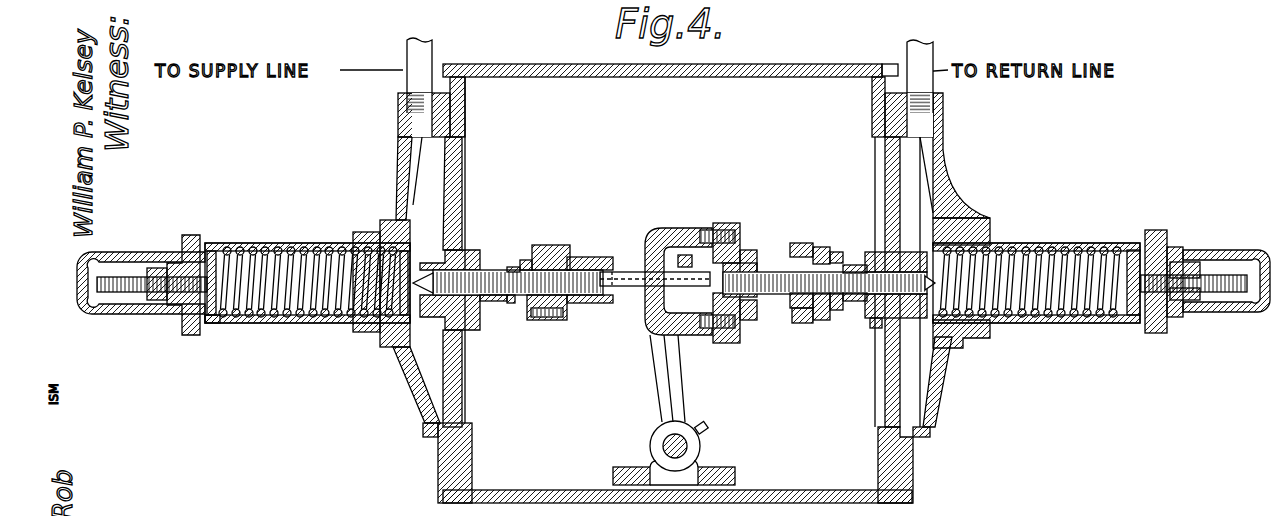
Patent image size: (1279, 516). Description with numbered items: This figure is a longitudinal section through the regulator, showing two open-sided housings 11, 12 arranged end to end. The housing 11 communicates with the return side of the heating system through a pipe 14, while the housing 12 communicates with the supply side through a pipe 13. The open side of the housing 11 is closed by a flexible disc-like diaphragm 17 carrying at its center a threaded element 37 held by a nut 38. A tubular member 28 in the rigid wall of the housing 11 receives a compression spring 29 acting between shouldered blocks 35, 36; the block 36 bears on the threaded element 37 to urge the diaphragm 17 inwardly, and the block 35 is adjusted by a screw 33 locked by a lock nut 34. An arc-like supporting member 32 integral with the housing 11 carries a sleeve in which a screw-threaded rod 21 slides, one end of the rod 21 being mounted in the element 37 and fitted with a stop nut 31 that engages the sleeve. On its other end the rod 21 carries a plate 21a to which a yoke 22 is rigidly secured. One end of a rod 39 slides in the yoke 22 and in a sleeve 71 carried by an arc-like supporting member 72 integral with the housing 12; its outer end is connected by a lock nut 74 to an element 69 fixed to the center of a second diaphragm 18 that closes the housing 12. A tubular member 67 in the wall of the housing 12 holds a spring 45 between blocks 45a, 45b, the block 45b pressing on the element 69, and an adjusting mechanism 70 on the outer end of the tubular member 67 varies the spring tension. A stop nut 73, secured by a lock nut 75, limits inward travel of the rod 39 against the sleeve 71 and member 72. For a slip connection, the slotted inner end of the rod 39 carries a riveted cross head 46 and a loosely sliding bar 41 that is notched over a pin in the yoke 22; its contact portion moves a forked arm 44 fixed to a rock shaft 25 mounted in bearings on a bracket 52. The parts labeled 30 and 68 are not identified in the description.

The housing 11 is at (940, 403).
The housing 12 is at (405, 383).
The pipe 13 is at (422, 53).
The pipe or conduit 14 is at (913, 50).
The diaphragm 17 is at (888, 155).
The diaphragm 18 is at (452, 185).
The screw-threaded rod 21 is at (782, 298).
The plate 21a is at (727, 224).
The yoke 22 is at (653, 248).
The rock shaft 25 is at (668, 440).
The tubular member 28 is at (1007, 247).
The compression spring 29 is at (1050, 256).
The adjusting nut 30 is at (1187, 277).
The stop nut 31 is at (827, 252).
The arc-like supporting member 32 is at (793, 243).
The screw 33 is at (1227, 277).
The lock nut 34 is at (1197, 296).
The shouldered block 35 is at (1133, 252).
The shouldered block 36 is at (942, 253).
The threaded element 37 is at (877, 327).
The nut 38 is at (908, 250).
The rod 39 is at (562, 321).
The bar 41 is at (650, 292).
The forked arm 44 is at (660, 372).
The spring 45 is at (267, 257).
The block 45a is at (212, 323).
The block 45b is at (407, 318).
The cross head 46 is at (710, 328).
The bracket or support 52 is at (735, 484).
The tubular member 67 is at (227, 253).
The flange nut 68 is at (378, 240).
The element 69 is at (532, 256).
The adjusting mechanism 70 is at (153, 270).
The sleeve 71 is at (563, 248).
The arc-like supporting member 72 is at (493, 252).
The stop nut 73 is at (527, 312).
The lock nut 74 is at (515, 303).
The lock nut 75 is at (506, 304).